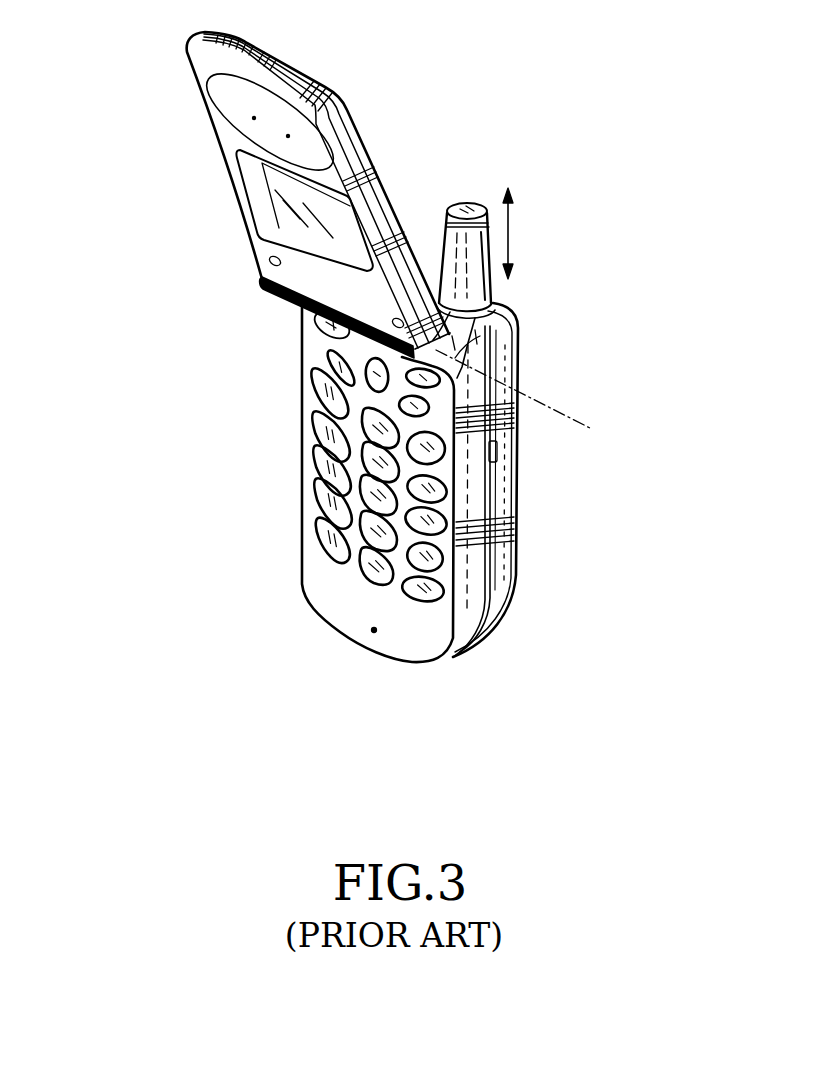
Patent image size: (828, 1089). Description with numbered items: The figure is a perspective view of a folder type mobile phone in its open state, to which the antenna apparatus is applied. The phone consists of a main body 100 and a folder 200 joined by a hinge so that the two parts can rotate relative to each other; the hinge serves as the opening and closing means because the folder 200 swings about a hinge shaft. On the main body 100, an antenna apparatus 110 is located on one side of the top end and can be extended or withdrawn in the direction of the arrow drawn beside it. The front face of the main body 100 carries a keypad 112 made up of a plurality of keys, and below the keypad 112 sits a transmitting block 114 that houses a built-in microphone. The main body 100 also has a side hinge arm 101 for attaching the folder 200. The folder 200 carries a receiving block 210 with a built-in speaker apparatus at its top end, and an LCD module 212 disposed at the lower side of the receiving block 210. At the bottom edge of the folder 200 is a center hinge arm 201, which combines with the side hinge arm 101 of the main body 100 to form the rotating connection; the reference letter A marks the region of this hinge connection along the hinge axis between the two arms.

The main body 100 is at (532, 499).
The side hinge arm 101 is at (440, 349).
The antenna apparatus 110 is at (491, 250).
The keypad 112 is at (330, 489).
The transmitting block 114 is at (374, 632).
The folder 200 is at (184, 129).
The center hinge arm 201 is at (412, 347).
The receiving block 210 is at (303, 150).
The LCD module 212 is at (283, 223).
The hinge axis A is at (565, 420).